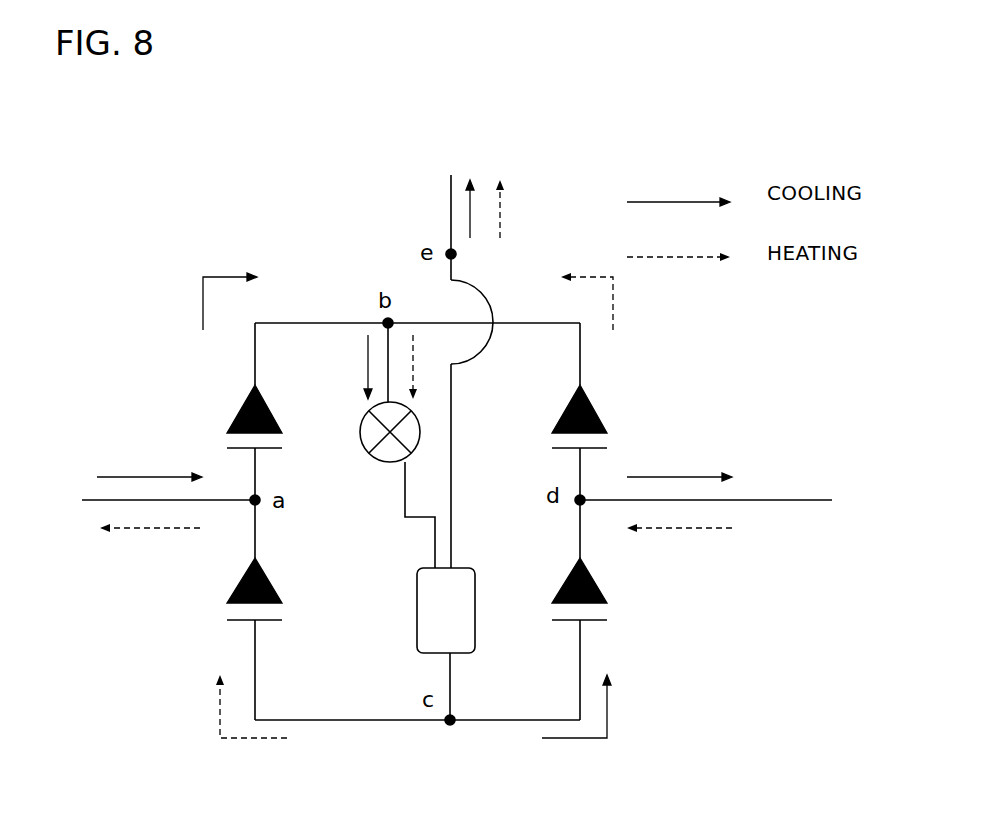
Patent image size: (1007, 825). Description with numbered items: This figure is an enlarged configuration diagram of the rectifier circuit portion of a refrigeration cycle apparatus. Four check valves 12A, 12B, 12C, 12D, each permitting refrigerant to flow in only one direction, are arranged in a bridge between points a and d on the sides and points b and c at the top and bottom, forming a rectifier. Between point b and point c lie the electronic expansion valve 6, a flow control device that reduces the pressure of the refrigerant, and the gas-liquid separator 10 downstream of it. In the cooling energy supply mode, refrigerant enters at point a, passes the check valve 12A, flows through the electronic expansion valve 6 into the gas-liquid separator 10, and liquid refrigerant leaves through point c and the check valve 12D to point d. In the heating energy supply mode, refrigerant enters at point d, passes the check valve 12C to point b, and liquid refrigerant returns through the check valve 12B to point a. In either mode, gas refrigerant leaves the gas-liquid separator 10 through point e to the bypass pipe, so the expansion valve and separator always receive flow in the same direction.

The electronic expansion valve 6 is at (361, 425).
The gas-liquid separator 10 is at (417, 597).
The check valve 12A is at (240, 405).
The check valve 12B is at (238, 582).
The check valve 12C is at (600, 410).
The check valve 12D is at (597, 585).